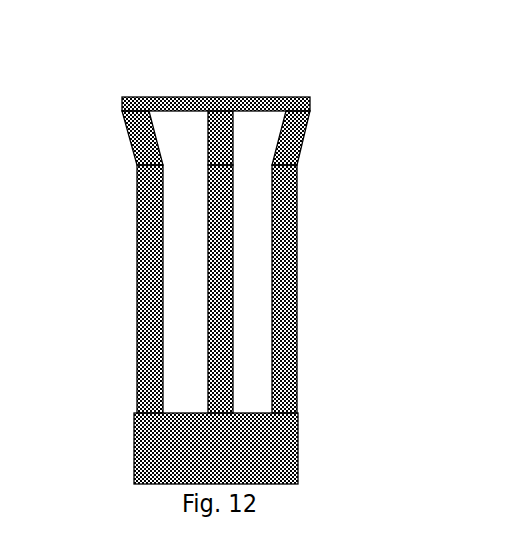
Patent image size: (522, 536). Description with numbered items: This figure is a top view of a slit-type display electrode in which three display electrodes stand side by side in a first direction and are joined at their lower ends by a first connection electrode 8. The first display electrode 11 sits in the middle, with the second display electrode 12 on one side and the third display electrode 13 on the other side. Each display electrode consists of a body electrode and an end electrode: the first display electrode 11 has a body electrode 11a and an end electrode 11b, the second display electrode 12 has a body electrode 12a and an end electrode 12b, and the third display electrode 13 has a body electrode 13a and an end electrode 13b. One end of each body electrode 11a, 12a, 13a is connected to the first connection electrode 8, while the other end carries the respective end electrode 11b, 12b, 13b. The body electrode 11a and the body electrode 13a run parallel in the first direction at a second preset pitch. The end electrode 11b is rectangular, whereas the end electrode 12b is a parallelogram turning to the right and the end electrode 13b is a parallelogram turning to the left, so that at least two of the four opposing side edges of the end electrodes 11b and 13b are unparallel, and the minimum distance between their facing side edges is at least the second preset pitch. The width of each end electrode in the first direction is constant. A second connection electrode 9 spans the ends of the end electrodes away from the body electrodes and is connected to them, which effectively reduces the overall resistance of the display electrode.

The first connection electrode 8 is at (308, 453).
The second connection electrode 9 is at (318, 102).
The first display electrode 11 is at (196, 206).
The body electrode of the first display electrode 11a is at (210, 176).
The end electrode of the first display electrode 11b is at (222, 117).
The second display electrode 12 is at (337, 262).
The body electrode of the second display electrode 12a is at (303, 205).
The end electrode of the second display electrode 12b is at (300, 150).
The third display electrode 13 is at (99, 262).
The body electrode of the third display electrode 13a is at (133, 206).
The end electrode of the third display electrode 13b is at (136, 149).